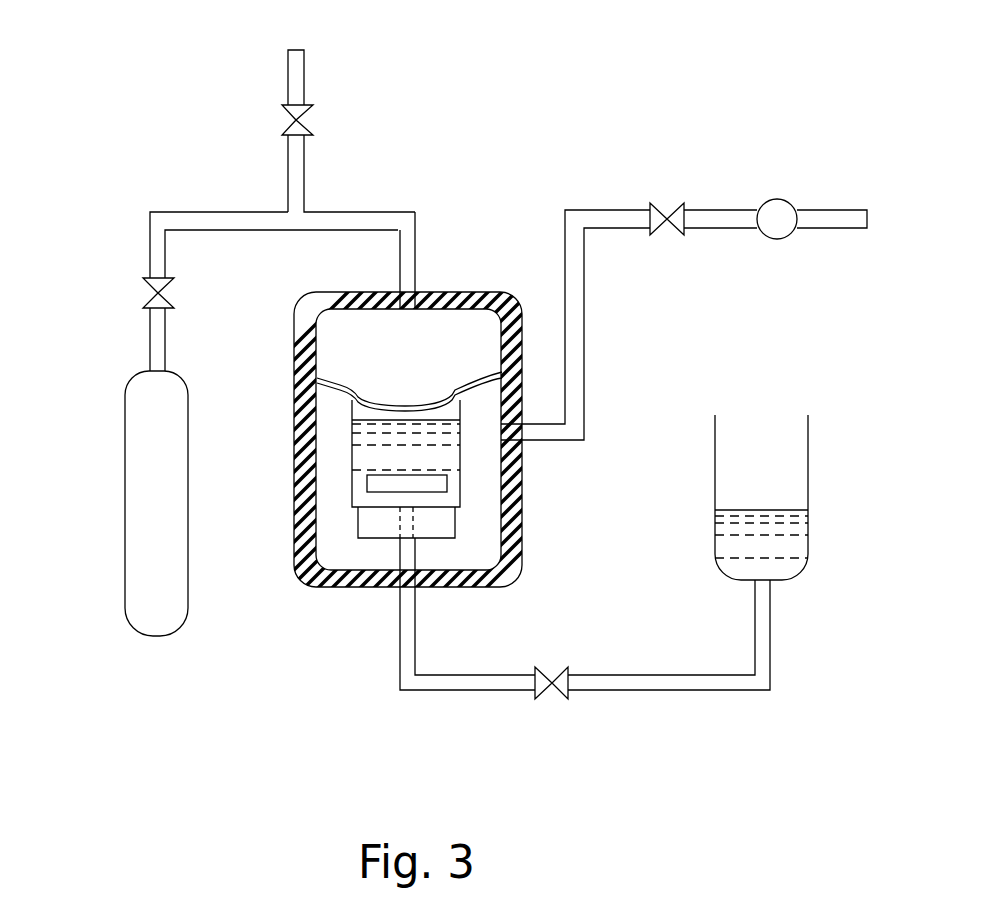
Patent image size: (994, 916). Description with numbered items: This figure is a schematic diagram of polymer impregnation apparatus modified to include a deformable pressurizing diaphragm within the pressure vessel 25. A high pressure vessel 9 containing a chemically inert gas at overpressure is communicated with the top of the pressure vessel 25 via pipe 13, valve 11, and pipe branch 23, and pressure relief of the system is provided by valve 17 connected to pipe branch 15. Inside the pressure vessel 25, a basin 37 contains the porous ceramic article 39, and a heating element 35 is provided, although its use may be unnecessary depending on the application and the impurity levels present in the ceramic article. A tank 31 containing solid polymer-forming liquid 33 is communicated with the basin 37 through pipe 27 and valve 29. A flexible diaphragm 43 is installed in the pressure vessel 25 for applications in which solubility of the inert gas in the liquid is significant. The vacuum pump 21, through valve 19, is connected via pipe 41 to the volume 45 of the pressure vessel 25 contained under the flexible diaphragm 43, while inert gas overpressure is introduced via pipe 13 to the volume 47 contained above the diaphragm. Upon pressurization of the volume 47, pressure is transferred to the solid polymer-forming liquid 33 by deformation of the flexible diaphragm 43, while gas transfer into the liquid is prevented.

The high pressure vessel 9 is at (125, 555).
The valve 11 is at (144, 303).
The pipe 13 is at (150, 249).
The pipe branch 15 is at (305, 190).
The valve 17 is at (287, 128).
The valve 19 is at (662, 218).
The vacuum pump 21 is at (793, 201).
The pipe branch 23 is at (398, 270).
The pressure vessel 25 is at (483, 292).
The pipe 27 is at (457, 692).
The valve 29 is at (543, 693).
The tank 31 is at (808, 480).
The solid polymer-forming liquid 33 is at (768, 547).
The heating element 35 is at (358, 530).
The basin 37 is at (352, 453).
The porous ceramic article 39 is at (438, 485).
The pipe 41 is at (585, 332).
The flexible diaphragm 43 is at (360, 395).
The volume 45 is at (352, 550).
The volume 47 is at (420, 353).